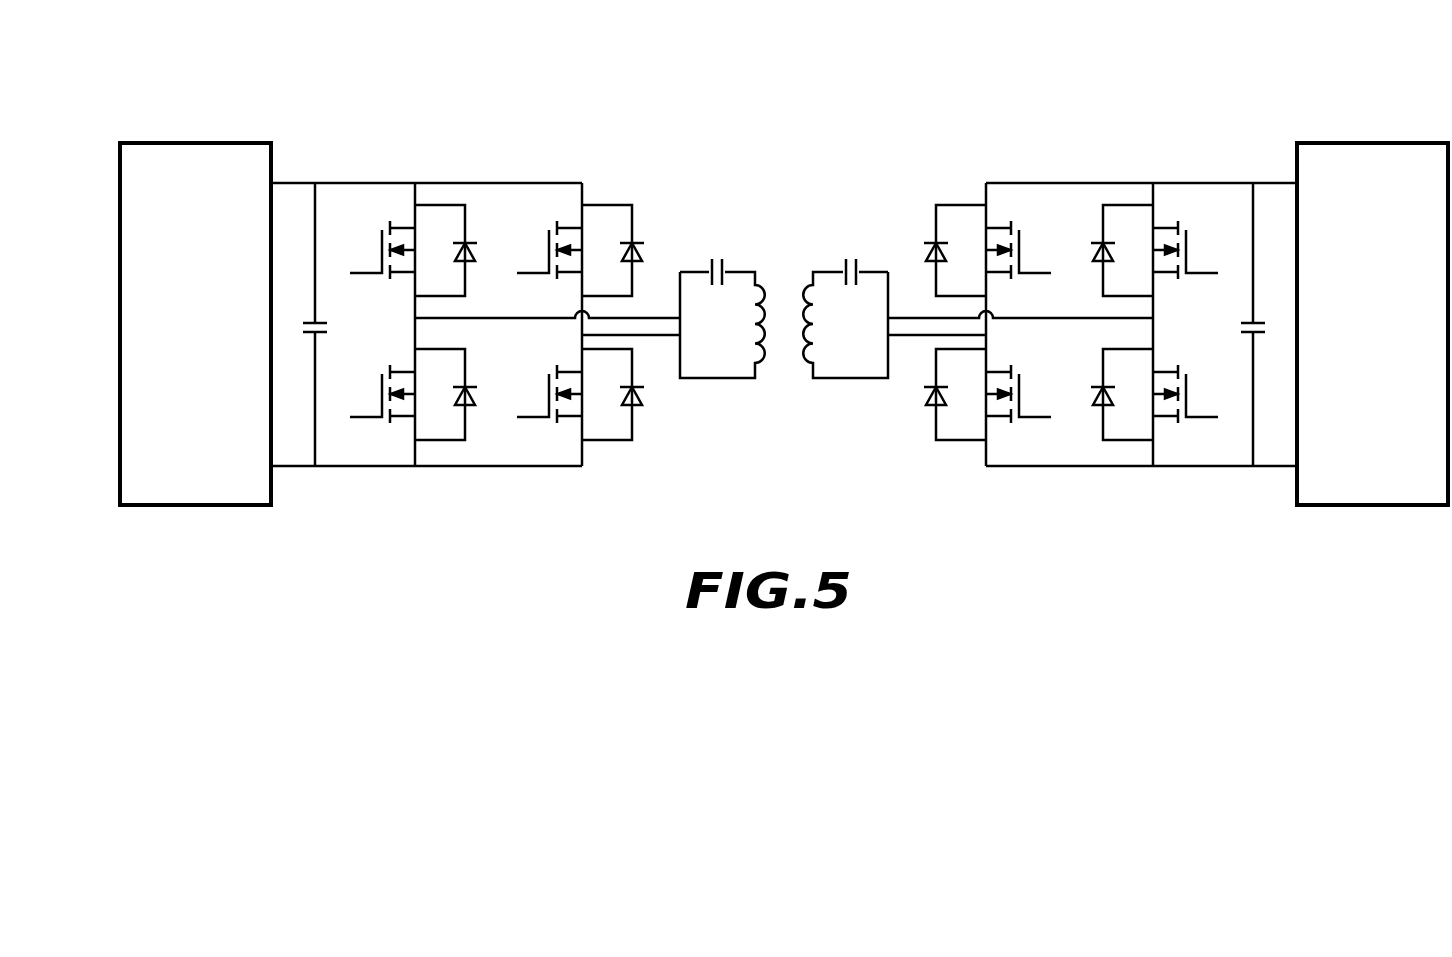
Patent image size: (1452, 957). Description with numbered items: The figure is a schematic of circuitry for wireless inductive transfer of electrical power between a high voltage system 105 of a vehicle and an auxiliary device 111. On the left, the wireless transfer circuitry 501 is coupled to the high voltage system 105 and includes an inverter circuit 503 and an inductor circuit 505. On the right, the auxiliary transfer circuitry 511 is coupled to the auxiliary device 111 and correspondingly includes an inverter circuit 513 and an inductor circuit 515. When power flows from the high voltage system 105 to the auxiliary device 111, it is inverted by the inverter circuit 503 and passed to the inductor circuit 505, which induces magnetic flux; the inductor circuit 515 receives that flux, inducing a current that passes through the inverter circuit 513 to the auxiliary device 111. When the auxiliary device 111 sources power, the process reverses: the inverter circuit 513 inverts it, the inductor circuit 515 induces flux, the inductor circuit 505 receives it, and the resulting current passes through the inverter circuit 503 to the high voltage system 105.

The high voltage system 105 is at (216, 429).
The auxiliary device 111 is at (1392, 429).
The wireless transfer circuitry 501 is at (518, 236).
The inverter circuit 503 is at (396, 154).
The inductor circuit 505 is at (690, 220).
The auxiliary transfer circuitry 511 is at (1050, 236).
The inverter circuit 513 is at (1172, 154).
The inductor circuit 515 is at (877, 220).